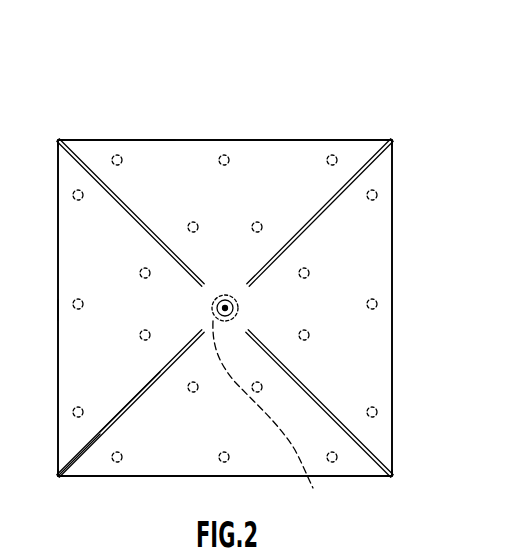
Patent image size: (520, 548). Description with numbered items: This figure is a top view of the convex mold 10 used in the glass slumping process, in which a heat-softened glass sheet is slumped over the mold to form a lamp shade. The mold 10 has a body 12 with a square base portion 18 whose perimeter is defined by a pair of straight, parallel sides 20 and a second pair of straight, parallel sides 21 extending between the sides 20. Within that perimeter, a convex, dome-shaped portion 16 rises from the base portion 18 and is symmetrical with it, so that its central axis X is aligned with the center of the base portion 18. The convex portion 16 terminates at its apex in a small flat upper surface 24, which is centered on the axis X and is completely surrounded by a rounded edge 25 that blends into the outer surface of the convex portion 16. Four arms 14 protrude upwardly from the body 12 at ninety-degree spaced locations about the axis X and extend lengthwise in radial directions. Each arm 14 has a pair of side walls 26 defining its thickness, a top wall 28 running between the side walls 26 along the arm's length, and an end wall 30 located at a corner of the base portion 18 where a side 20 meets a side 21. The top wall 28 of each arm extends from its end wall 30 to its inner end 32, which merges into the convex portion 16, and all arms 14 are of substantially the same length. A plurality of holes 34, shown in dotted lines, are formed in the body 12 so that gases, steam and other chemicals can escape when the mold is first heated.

The convex mold 10 is at (389, 112).
The body 12 is at (383, 228).
The arms 14 is at (355, 165).
The convex portion 16 is at (155, 305).
The base portion 18 is at (164, 155).
The sides 20 is at (58, 224).
The sides 21 is at (268, 140).
The upper surface 24 is at (239, 319).
The edge 25 is at (270, 419).
The side walls 26 is at (90, 446).
The top wall 28 is at (143, 393).
The end wall 30 is at (58, 140).
The inner ends 32 is at (192, 332).
The holes 34 is at (80, 190).
The central axis X is at (238, 305).